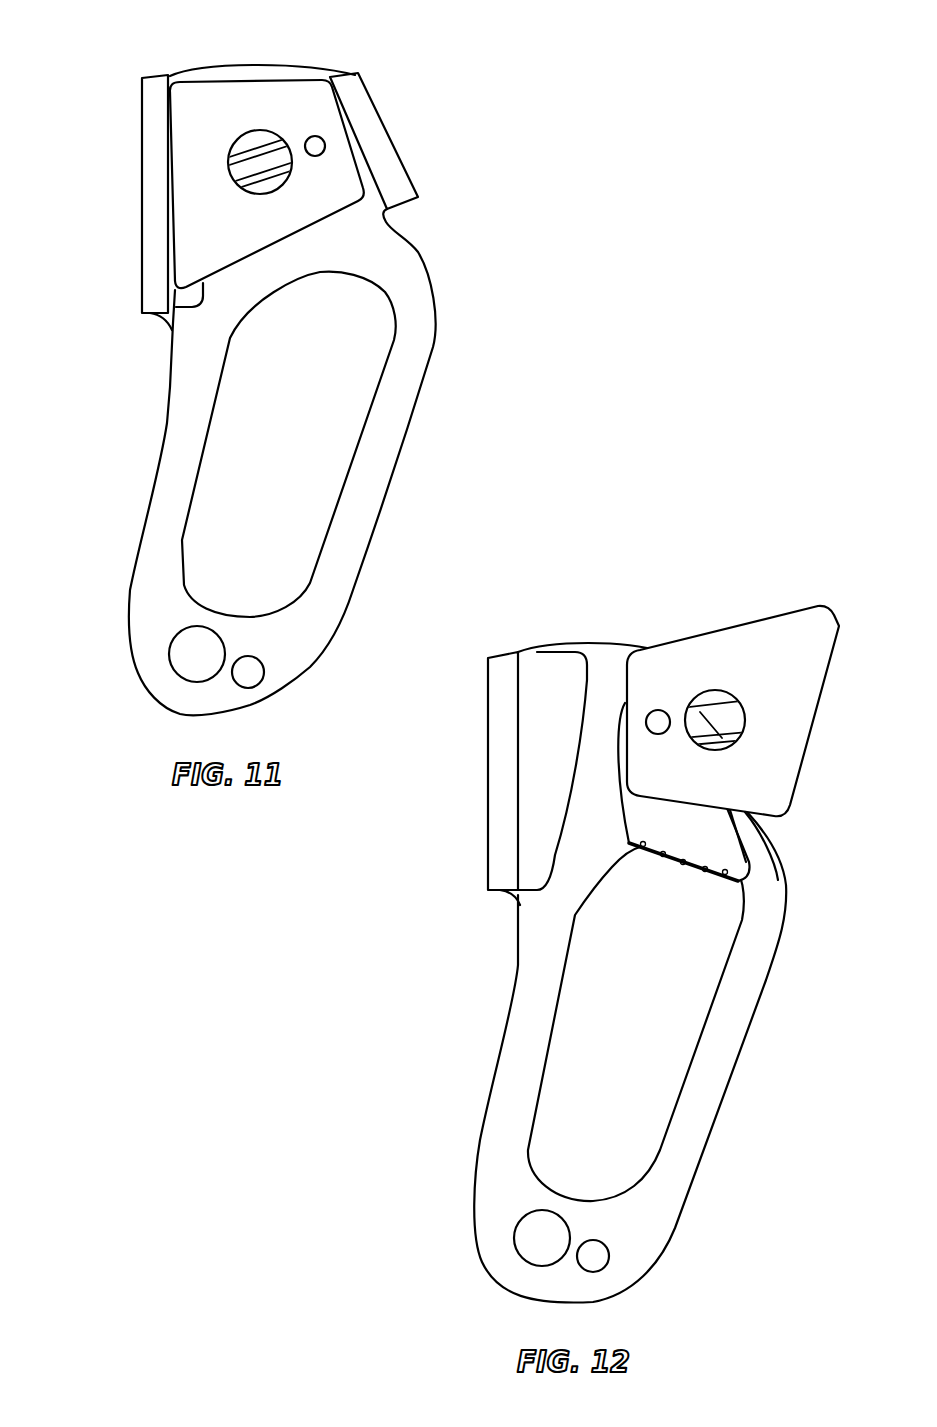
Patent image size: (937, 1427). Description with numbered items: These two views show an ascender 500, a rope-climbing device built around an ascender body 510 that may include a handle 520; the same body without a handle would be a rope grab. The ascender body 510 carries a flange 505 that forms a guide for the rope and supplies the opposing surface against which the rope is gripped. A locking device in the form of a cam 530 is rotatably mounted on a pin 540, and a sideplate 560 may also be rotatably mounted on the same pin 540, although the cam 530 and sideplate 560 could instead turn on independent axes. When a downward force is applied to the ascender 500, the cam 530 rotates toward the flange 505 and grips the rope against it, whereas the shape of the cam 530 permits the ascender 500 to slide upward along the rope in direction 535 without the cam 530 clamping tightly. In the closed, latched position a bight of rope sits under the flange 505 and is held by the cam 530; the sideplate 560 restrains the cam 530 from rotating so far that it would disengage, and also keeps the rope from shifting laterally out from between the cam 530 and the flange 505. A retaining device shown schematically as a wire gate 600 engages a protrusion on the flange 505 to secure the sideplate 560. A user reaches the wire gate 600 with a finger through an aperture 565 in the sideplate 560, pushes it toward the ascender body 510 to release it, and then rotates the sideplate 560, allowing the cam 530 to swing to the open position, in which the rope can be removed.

In FIG. 11, the ascender 500 is at (323, 364).
In FIG. 12, the ascender 500 is at (655, 932).
In FIG. 11, the flange 505 is at (207, 73).
In FIG. 12, the flange 505 is at (557, 672).
In FIG. 11, the ascender body 510 is at (165, 423).
In FIG. 12, the ascender body 510 is at (511, 998).
In FIG. 11, the handle 520 is at (438, 426).
In FIG. 12, the handle 520 is at (780, 1004).
In FIG. 12, the cam 530 is at (718, 850).
In FIG. 11, the direction 535 is at (70, 233).
In FIG. 12, the direction 535 is at (415, 811).
In FIG. 11, the pin 540 is at (326, 146).
In FIG. 12, the pin 540 is at (662, 710).
In FIG. 12, the sideplate 560 is at (795, 670).
In FIG. 11, the aperture 565 is at (256, 130).
In FIG. 12, the wire gate 600 is at (716, 700).